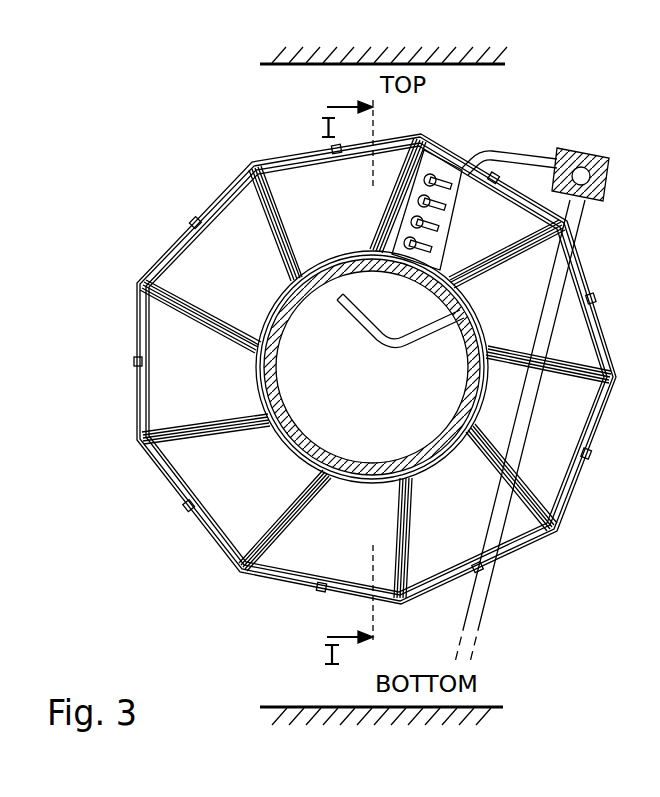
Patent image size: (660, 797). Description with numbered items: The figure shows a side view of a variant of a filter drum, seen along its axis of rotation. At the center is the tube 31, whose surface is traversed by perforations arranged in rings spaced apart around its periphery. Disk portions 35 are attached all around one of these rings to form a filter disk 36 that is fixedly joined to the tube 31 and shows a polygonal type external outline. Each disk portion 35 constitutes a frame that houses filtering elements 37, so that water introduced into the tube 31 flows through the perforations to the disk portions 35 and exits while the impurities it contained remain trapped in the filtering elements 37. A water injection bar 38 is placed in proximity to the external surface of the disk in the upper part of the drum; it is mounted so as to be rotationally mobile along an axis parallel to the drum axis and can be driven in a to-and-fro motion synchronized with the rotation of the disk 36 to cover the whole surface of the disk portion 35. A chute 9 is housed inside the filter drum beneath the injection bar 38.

The chute 9 is at (278, 278).
The tube 31 is at (283, 305).
The disk portions 35 is at (212, 200).
The filter disks 36 is at (136, 312).
The filtering elements 37 is at (322, 198).
The water injection bars 38 is at (520, 150).